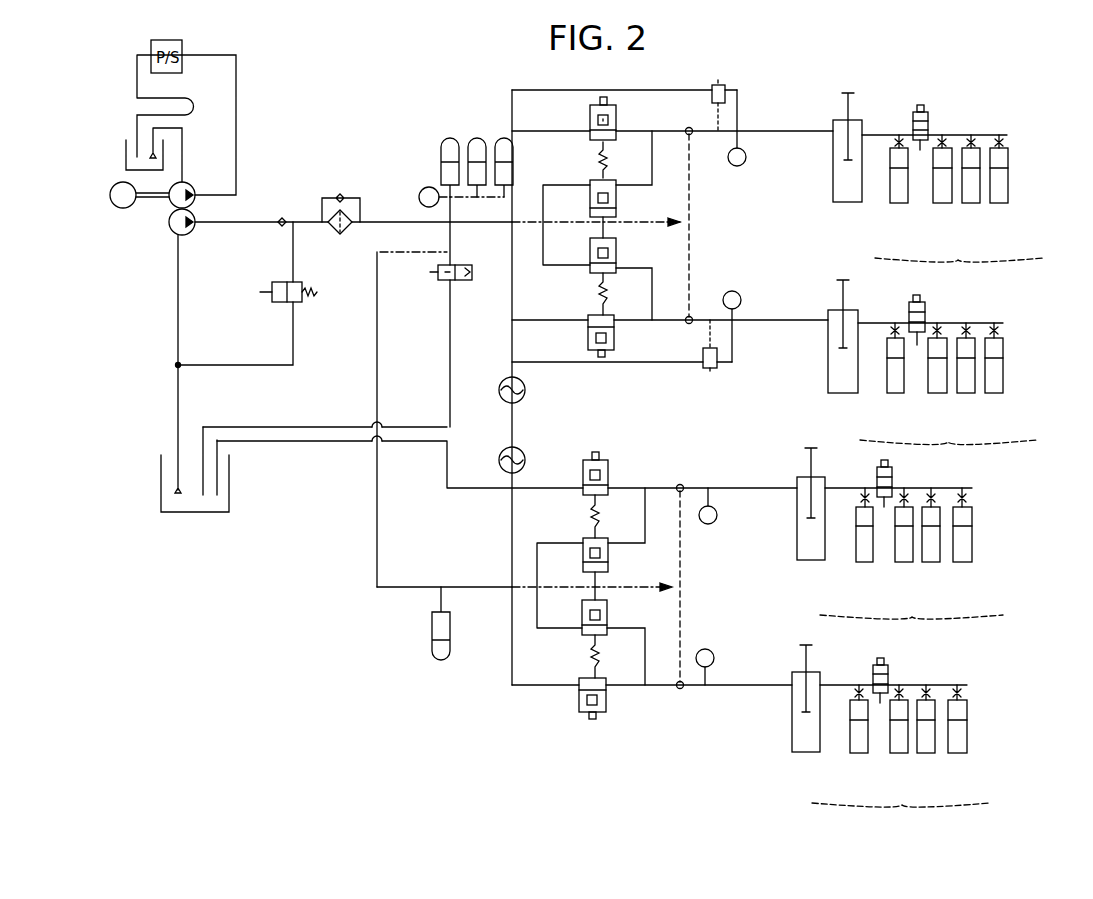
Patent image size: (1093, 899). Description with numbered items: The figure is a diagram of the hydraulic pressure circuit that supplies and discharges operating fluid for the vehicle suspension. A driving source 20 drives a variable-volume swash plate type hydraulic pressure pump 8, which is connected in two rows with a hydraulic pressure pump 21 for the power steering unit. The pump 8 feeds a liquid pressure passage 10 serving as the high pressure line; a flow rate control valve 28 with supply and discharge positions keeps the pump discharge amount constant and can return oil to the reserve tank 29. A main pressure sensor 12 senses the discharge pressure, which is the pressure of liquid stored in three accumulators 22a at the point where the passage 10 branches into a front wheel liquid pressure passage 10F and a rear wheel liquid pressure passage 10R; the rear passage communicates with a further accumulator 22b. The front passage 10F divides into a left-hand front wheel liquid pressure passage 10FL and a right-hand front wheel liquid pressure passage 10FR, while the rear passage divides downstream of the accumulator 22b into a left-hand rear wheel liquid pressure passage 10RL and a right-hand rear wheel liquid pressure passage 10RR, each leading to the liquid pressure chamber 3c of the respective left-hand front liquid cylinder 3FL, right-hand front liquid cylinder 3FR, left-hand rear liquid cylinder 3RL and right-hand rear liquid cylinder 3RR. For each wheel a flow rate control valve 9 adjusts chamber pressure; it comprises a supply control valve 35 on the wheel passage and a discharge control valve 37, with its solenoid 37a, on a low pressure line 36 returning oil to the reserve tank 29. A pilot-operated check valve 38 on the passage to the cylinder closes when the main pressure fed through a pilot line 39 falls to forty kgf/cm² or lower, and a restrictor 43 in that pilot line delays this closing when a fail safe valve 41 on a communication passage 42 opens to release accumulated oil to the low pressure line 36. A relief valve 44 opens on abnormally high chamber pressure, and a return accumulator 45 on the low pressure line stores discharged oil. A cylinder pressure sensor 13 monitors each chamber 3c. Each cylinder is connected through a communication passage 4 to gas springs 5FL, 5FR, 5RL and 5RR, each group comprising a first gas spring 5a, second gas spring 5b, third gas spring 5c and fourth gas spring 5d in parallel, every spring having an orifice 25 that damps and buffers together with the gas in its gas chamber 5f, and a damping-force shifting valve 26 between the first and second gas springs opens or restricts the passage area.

The driving source 20 is at (110, 205).
The hydraulic pressure pump for power steering unit 21 is at (193, 180).
The hydraulic pressure pump 8 is at (169, 230).
The flow rate control valve 28 is at (305, 285).
The reserve tank 29 is at (229, 500).
The liquid pressure passage 10 is at (387, 221).
The main pressure sensor 12 is at (425, 188).
The accumulator 22a is at (504, 136).
The accumulator 22b is at (441, 665).
The front wheel liquid pressure passage 10F is at (472, 226).
The rear wheel liquid pressure passage 10R is at (475, 585).
The fail safe valve 41 is at (463, 282).
The communication passage 42 is at (445, 312).
The low pressure line 36 is at (445, 462).
The return accumulator 45 is at (530, 392).
The flow rate control valve 9 is at (570, 663).
The discharge control valve 37 is at (625, 705).
The solenoid 37a is at (597, 740).
The supply control valve 35 is at (635, 615).
The restrictor 43 is at (640, 580).
The pilot line 39 is at (692, 232).
The check valve 38 is at (680, 735).
The cylinder pressure sensor 13 is at (705, 648).
The relief valve 44 is at (730, 392).
The left-hand front wheel liquid pressure passage 10FL is at (772, 130).
The right-hand front wheel liquid pressure passage 10FR is at (783, 320).
The left-hand rear wheel liquid pressure passage 10RL is at (753, 490).
The right-hand rear wheel liquid pressure passage 10RR is at (757, 685).
The liquid pressure chamber 3c is at (792, 705).
The left-hand front liquid cylinder 3FL is at (833, 185).
The right-hand front liquid cylinder 3FR is at (828, 375).
The left-hand rear liquid cylinder 3RL is at (797, 540).
The right-hand rear liquid cylinder 3RR is at (792, 735).
The communication passage 4 is at (883, 133).
The gas chamber 5f is at (1012, 187).
The orifice 25 is at (1010, 142).
The damping-force shifting valve 26 is at (875, 668).
The first gas spring 5a is at (845, 775).
The second gas spring 5b is at (885, 775).
The third gas spring 5c is at (932, 775).
The fourth gas spring 5d is at (965, 775).
The gas springs 5FL is at (959, 277).
The gas springs 5FR is at (948, 462).
The gas springs 5RL is at (911, 636).
The gas springs 5RR is at (901, 827).